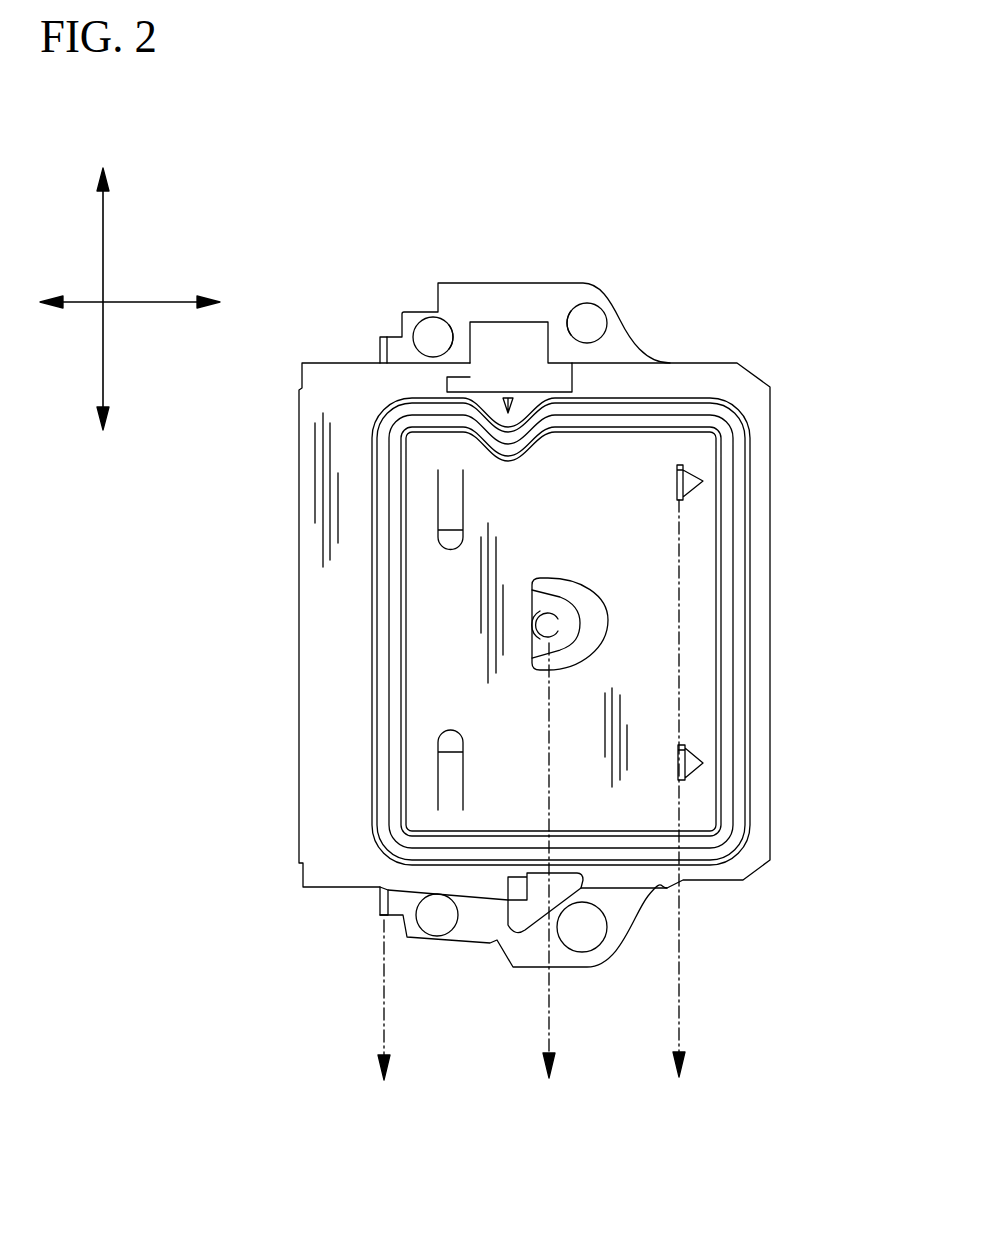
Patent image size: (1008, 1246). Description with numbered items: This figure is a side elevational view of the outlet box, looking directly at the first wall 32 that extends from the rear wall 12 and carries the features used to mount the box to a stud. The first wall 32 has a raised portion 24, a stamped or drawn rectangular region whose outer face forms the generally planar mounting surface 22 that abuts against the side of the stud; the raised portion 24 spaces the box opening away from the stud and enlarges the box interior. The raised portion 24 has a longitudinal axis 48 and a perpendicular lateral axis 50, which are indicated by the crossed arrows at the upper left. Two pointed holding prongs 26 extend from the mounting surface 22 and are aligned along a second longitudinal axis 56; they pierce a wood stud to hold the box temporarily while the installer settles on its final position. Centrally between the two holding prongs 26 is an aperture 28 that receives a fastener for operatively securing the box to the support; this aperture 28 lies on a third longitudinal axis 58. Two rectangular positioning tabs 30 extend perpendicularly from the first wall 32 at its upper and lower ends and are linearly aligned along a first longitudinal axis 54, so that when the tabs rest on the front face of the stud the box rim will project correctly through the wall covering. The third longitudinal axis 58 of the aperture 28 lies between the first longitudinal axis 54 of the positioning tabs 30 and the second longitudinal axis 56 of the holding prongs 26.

The rear wall 12 is at (770, 712).
The mounting surface 22 is at (425, 602).
The raised portion 24 is at (698, 553).
The holding prongs 26 is at (687, 472).
The aperture 28 is at (547, 625).
The positioning tabs 30 is at (380, 347).
The first wall 32 is at (337, 785).
The longitudinal axis 48 is at (103, 209).
The lateral axis 50 is at (178, 297).
The first longitudinal axis 54 is at (384, 995).
The second longitudinal axis 56 is at (679, 975).
The third longitudinal axis 58 is at (549, 998).